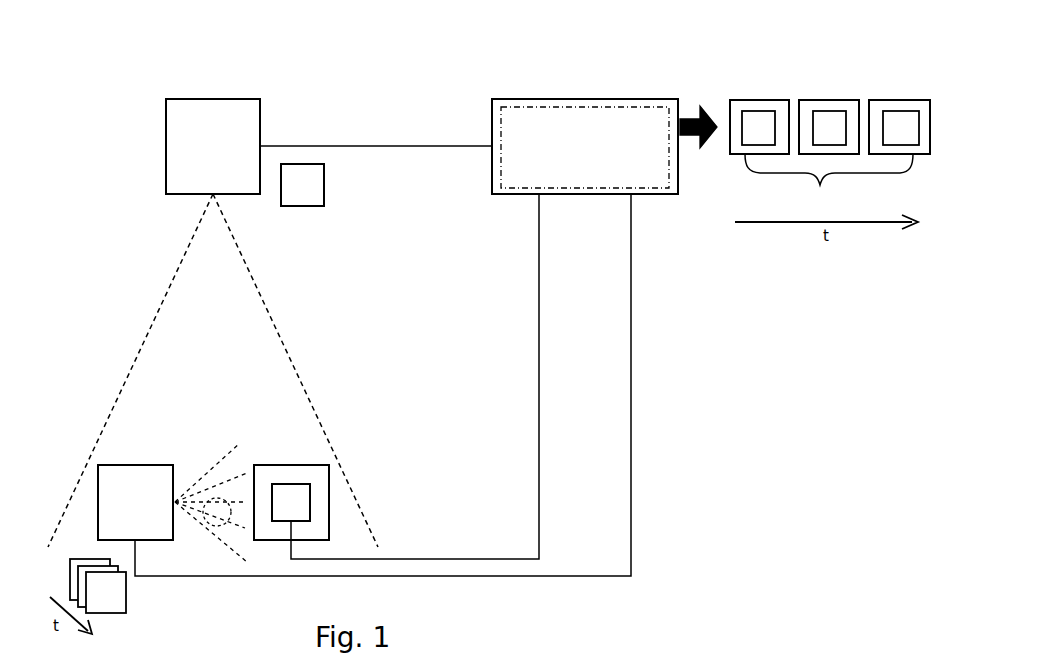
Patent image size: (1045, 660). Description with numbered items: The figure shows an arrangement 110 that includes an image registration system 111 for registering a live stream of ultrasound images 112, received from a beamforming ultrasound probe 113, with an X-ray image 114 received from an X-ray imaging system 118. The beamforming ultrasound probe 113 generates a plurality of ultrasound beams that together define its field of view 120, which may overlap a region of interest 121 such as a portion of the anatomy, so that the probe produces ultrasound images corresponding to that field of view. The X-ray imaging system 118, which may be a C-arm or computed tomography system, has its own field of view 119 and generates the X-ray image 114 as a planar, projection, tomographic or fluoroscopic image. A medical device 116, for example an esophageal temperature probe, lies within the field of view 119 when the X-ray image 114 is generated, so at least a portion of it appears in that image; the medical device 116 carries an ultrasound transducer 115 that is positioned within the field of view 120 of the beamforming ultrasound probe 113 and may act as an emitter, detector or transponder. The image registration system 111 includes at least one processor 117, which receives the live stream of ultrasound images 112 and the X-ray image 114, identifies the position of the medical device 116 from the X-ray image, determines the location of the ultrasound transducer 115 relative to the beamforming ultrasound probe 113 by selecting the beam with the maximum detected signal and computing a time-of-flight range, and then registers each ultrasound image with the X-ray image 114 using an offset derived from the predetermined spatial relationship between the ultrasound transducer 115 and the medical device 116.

The arrangement 110 is at (332, 87).
The image registration system 111 is at (525, 99).
The live stream of ultrasound images 112 is at (123, 593).
The beamforming ultrasound probe 113 is at (135, 502).
The X-ray image 114 is at (311, 187).
The ultrasound transducer 115 is at (300, 490).
The medical device 116 is at (320, 492).
The processor 117 is at (585, 146).
The X-ray imaging system 118 is at (213, 146).
The field of view 119 is at (307, 392).
The field of view 120 is at (242, 443).
The region of interest 121 is at (217, 501).